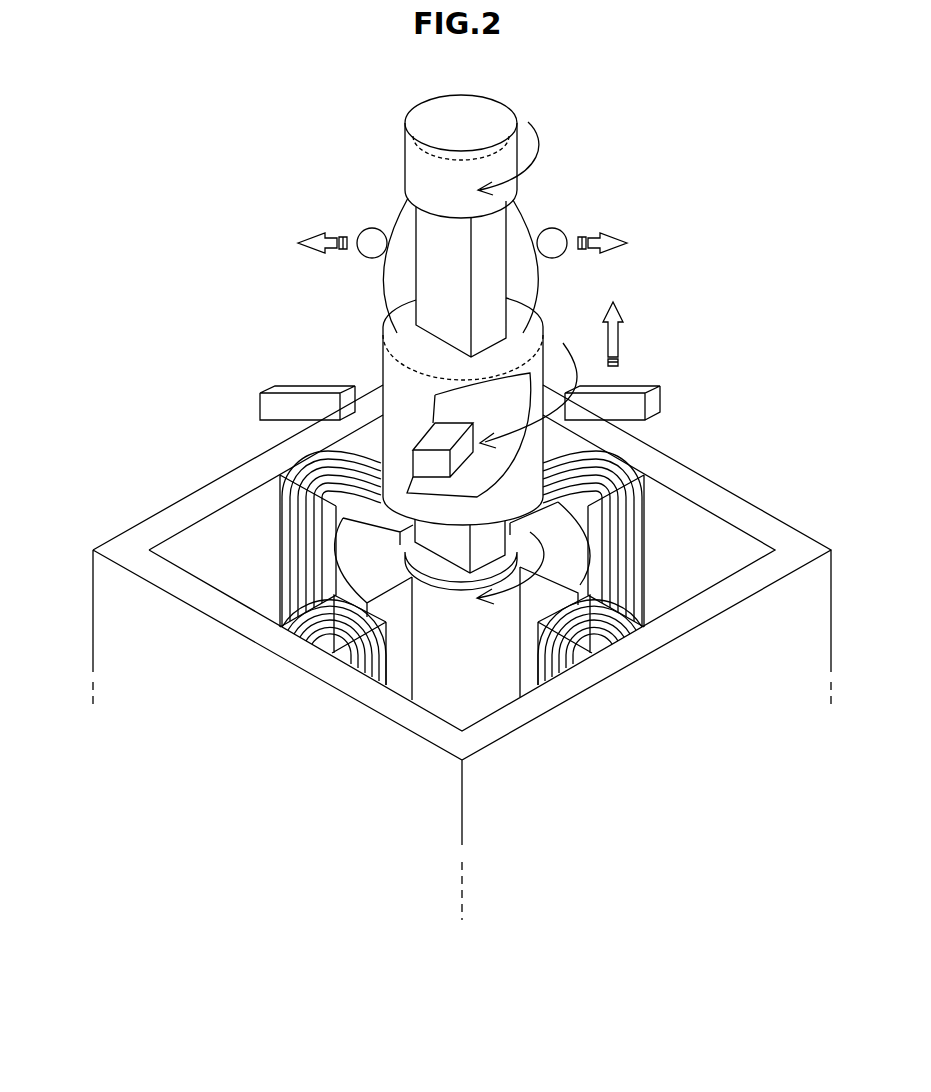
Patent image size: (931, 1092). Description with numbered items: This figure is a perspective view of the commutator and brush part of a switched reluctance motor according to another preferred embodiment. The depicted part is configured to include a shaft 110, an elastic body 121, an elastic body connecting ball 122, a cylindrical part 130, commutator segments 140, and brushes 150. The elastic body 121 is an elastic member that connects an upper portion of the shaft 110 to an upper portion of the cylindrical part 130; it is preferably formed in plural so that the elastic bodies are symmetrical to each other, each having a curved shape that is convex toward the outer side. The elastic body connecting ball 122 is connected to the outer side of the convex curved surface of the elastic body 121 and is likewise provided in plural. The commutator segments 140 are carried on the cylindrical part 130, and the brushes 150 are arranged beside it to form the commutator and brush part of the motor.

The shaft 110 is at (420, 173).
The elastic body 121 is at (522, 208).
The elastic body connecting ball 122 is at (553, 240).
The cylindrical part 130 is at (405, 350).
The commutator segments 140 is at (482, 474).
The brushes 150 is at (652, 403).